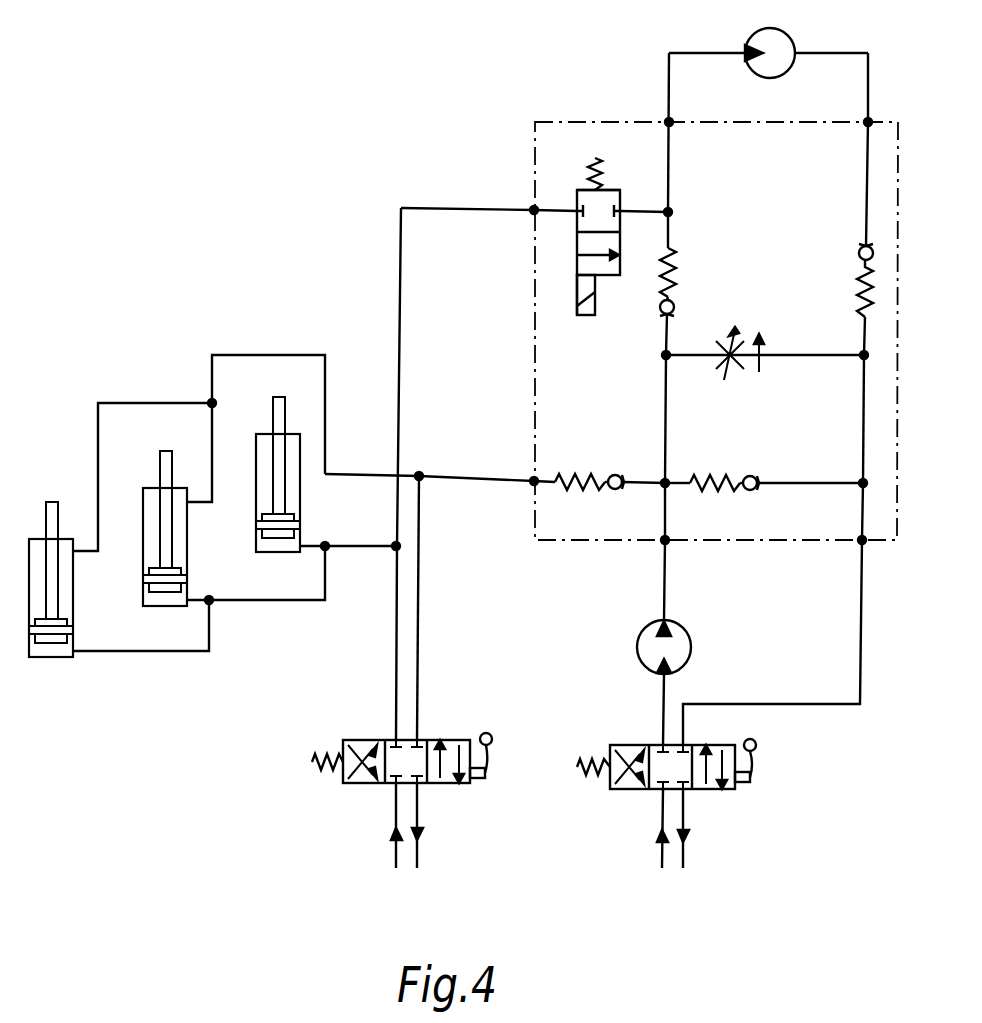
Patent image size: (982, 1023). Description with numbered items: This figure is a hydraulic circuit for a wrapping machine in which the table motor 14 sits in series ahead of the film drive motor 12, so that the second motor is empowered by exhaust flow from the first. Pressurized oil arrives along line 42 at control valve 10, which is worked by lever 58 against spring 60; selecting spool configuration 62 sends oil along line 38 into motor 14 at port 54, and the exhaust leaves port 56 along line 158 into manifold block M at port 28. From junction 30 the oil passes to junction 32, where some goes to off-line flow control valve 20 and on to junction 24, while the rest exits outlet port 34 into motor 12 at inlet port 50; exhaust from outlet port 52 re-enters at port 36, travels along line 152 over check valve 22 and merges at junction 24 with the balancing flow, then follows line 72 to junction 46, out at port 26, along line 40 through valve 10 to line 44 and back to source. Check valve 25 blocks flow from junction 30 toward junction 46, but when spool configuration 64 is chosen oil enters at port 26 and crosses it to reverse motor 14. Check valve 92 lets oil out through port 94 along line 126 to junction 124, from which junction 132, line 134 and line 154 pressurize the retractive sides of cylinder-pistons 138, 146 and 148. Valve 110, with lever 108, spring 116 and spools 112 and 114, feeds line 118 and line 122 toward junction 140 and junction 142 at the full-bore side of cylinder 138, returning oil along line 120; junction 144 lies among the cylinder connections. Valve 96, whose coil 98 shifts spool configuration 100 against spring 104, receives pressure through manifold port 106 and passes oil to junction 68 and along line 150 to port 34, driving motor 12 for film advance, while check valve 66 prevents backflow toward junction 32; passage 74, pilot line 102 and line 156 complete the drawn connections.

The control valve 10 is at (669, 763).
The film drive motor 12 is at (787, 69).
The table drive motor 14 is at (640, 655).
The off-line flow control valve 20 is at (740, 345).
The check valve 22 is at (858, 297).
The junction 24 is at (864, 355).
The check valve 25 is at (755, 478).
The port 26 is at (862, 540).
The port 28 is at (665, 540).
The junction 30 is at (667, 482).
The junction 32 is at (666, 355).
The outlet port 34 is at (668, 122).
The port 36 is at (868, 122).
The line 38 is at (664, 700).
The line 40 is at (860, 610).
The line 42 is at (662, 860).
The line 44 is at (684, 860).
The junction 46 is at (862, 483).
The inlet port 50 is at (745, 48).
The outlet port 52 is at (800, 46).
The inlet port 54 is at (680, 668).
The port 56 is at (675, 625).
The lever 58 is at (755, 770).
The spring 60 is at (582, 760).
The spool configuration 62 is at (720, 750).
The spool configuration 64 is at (630, 750).
The check valve 66 is at (675, 307).
The junction 68 is at (669, 212).
The line 72 is at (863, 430).
The pilot line 74 is at (640, 211).
The check valve 92 is at (618, 475).
The port 94 is at (534, 481).
The valve 96 is at (577, 285).
The valve coil 98 is at (595, 310).
The spool configuration 100 is at (577, 262).
The valve position 102 is at (578, 200).
The spring 104 is at (598, 177).
The manifold port 106 is at (534, 210).
The control lever 108 is at (488, 768).
The valve 110 is at (455, 783).
The valve spool 112 is at (397, 755).
The spool configuration 114 is at (365, 740).
The spring 116 is at (312, 770).
The line 118 is at (396, 855).
The line 120 is at (418, 855).
The line 122 is at (396, 643).
The junction 124 is at (421, 477).
The line 126 is at (455, 475).
The junction 132 is at (213, 403).
The line 134 is at (290, 355).
The cylinder-piston 138 is at (300, 462).
The junction 140 is at (396, 546).
The junction 142 is at (325, 546).
The junction 144 is at (210, 600).
The cylinder-piston 146 is at (188, 567).
The cylinder-piston 148 is at (73, 632).
The line 150 is at (669, 163).
The line 152 is at (866, 170).
The line 154 is at (98, 447).
The line 156 is at (418, 617).
The line 158 is at (664, 573).
The manifold block M is at (565, 548).